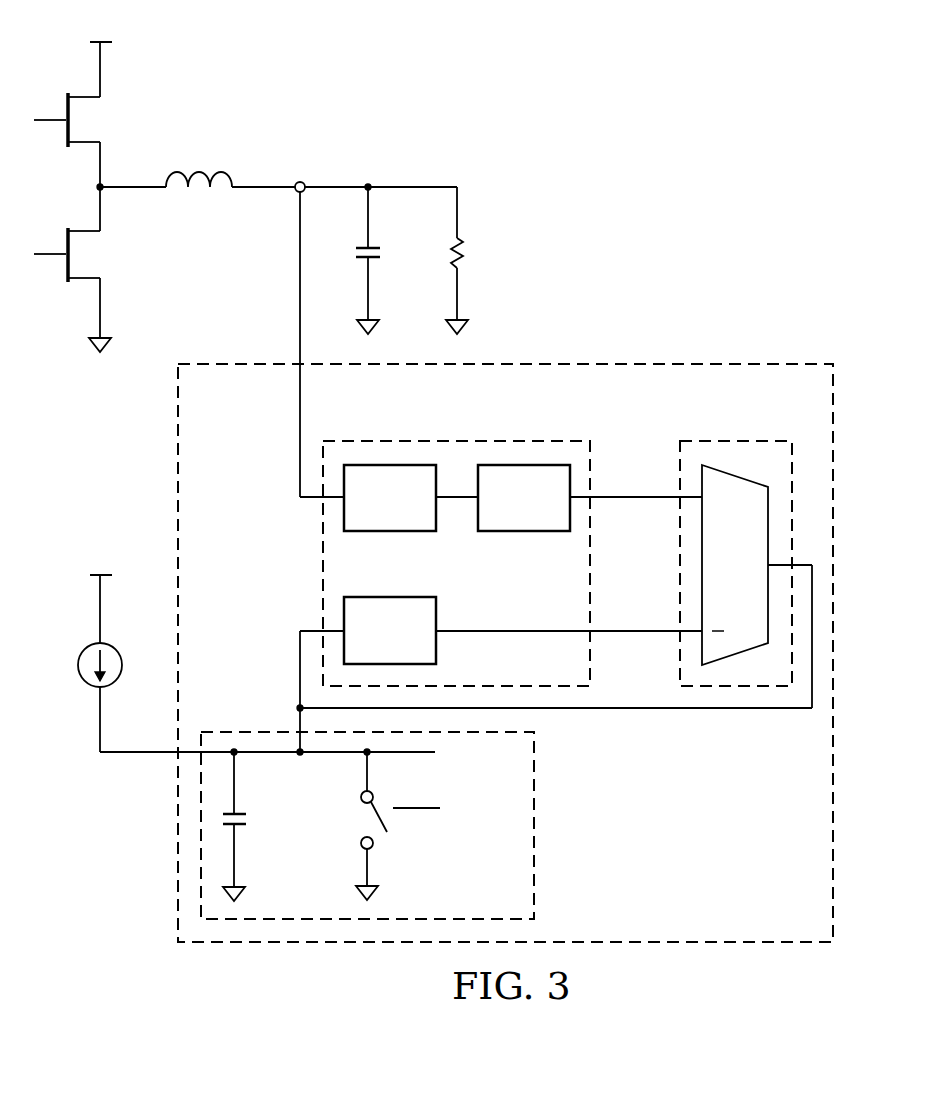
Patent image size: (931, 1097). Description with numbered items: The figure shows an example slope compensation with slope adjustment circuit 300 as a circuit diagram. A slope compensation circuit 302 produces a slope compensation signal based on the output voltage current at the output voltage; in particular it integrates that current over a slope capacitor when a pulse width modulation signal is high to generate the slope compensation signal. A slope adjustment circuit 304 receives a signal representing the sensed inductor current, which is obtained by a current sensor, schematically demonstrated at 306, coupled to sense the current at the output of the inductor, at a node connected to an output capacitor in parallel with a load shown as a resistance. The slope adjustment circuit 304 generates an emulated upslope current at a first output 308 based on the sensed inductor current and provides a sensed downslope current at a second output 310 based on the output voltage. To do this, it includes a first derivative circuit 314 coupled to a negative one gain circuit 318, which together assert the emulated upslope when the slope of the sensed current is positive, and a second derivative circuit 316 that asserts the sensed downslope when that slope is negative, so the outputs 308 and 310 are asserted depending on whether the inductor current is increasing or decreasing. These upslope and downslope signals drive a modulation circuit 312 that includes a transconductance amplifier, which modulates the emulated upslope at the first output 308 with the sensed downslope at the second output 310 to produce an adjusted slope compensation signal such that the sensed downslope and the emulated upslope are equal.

The slope compensation with slope adjustment circuit 300 is at (433, 476).
The slope compensation circuit 302 is at (535, 838).
The slope adjustment circuit 304 is at (454, 436).
The current sensor 306 is at (299, 182).
The first output 308 is at (633, 495).
The second output 310 is at (635, 633).
The modulation circuit 312 is at (735, 440).
The first derivative circuit 314 is at (390, 533).
The second derivative circuit 316 is at (437, 641).
The negative one gain circuit 318 is at (525, 533).